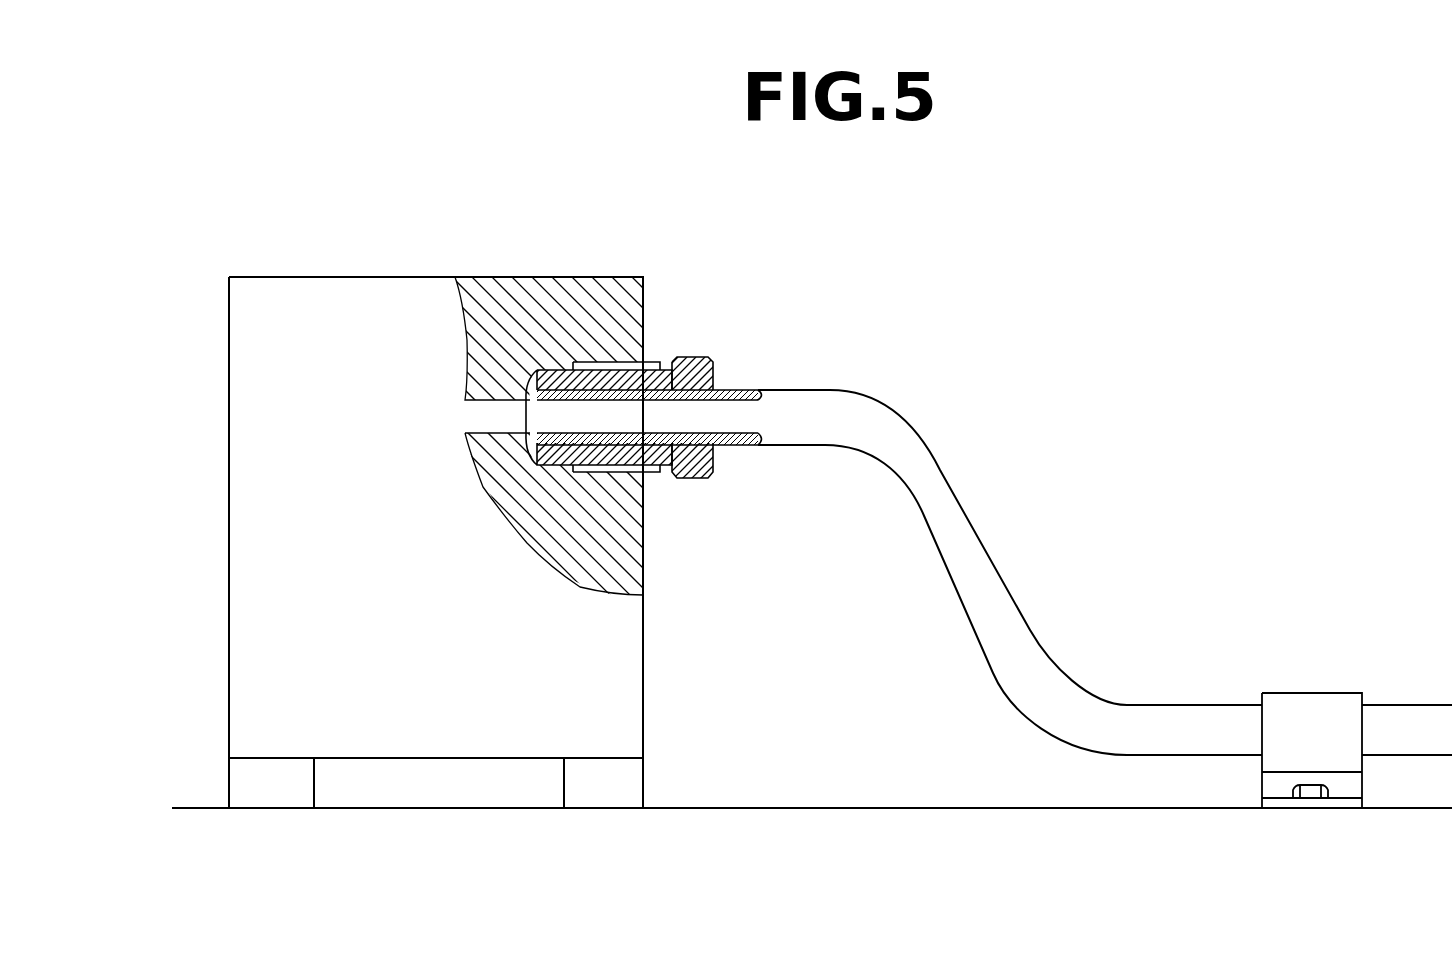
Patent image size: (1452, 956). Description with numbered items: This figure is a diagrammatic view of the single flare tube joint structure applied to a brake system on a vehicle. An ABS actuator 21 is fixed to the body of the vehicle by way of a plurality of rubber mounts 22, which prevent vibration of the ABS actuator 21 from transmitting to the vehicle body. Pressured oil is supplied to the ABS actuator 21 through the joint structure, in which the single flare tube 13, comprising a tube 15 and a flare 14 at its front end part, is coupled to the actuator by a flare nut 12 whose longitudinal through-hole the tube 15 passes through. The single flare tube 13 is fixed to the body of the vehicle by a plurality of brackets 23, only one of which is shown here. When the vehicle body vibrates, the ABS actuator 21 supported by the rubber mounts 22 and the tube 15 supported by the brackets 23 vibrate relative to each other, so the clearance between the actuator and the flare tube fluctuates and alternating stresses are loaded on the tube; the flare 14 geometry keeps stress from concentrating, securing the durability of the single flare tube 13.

The flare nut 12 is at (660, 362).
The single flare tube 13 is at (835, 415).
The flare 14 is at (537, 393).
The tube 15 is at (703, 365).
The ABS actuator 21 is at (388, 277).
The rubber mounts 22 is at (245, 780).
The brackets 23 is at (1288, 707).